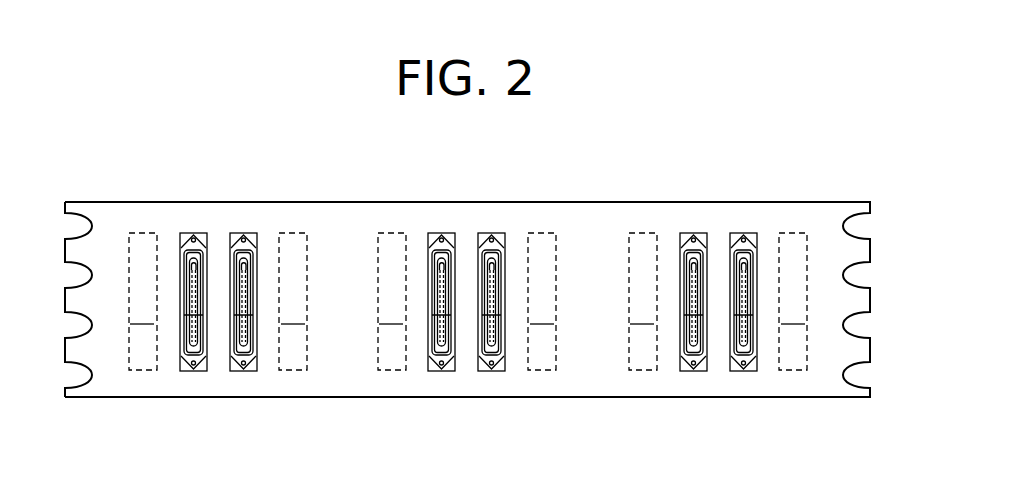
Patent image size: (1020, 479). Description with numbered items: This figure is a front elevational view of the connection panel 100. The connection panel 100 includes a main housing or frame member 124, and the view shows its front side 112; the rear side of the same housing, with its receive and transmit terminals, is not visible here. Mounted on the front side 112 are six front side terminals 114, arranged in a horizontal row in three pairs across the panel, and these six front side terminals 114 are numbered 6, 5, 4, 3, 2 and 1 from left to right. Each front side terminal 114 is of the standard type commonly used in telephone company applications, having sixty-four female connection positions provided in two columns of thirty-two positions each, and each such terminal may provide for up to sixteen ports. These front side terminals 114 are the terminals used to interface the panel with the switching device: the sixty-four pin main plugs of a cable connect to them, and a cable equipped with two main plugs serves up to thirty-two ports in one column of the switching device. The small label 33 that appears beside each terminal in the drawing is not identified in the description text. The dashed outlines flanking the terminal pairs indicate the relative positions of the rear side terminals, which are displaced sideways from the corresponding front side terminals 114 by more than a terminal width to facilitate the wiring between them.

The connection panel 100 is at (800, 188).
The front side 112 is at (112, 213).
The main housing or frame member 124 is at (63, 298).
The front side terminals 114 is at (242, 359).
The connector housing 33 is at (482, 302).
The front side terminal number 1 is at (461, 290).
The front side terminal number 2 is at (693, 290).
The front side terminal number 3 is at (491, 290).
The front side terminal number 4 is at (441, 290).
The front side terminal number 5 is at (243, 290).
The front side terminal number 6 is at (193, 290).